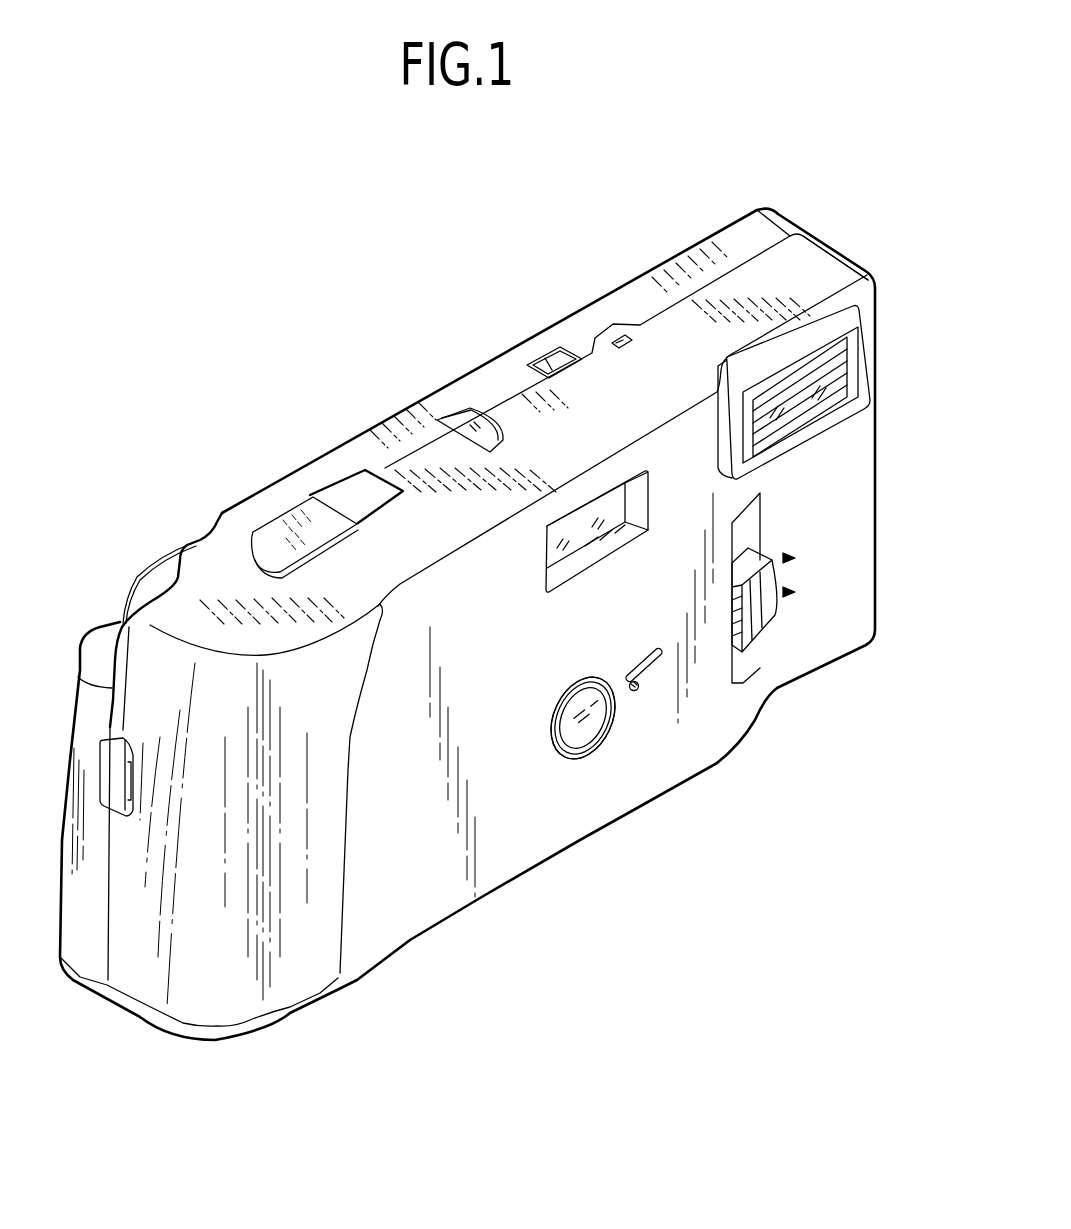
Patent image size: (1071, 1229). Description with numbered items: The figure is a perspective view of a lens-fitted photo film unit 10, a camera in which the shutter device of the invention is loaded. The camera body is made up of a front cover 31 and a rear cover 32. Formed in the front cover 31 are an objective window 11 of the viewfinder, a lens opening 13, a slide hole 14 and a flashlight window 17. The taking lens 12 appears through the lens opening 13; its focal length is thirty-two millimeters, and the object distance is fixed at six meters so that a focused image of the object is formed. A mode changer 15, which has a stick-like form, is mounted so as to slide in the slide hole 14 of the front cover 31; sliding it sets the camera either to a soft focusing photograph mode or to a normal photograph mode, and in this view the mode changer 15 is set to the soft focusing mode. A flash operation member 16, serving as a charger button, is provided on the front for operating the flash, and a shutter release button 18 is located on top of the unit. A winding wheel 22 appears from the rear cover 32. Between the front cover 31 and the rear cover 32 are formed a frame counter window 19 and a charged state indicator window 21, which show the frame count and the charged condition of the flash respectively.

The lens-fitted photo film unit 10 is at (630, 282).
The objective window 11 is at (560, 573).
The taking lens 12 is at (580, 720).
The lens opening 13 is at (597, 730).
The slide hole 14 is at (657, 663).
The mode changer 15 is at (640, 688).
The flash operation member 16 is at (762, 650).
The flashlight window 17 is at (856, 378).
The shutter release button 18 is at (286, 525).
The frame counter window 19 is at (465, 408).
The charged state indicator window 21 is at (536, 362).
The winding wheel 22 is at (149, 560).
The front cover 31 is at (818, 258).
The rear cover 32 is at (767, 228).